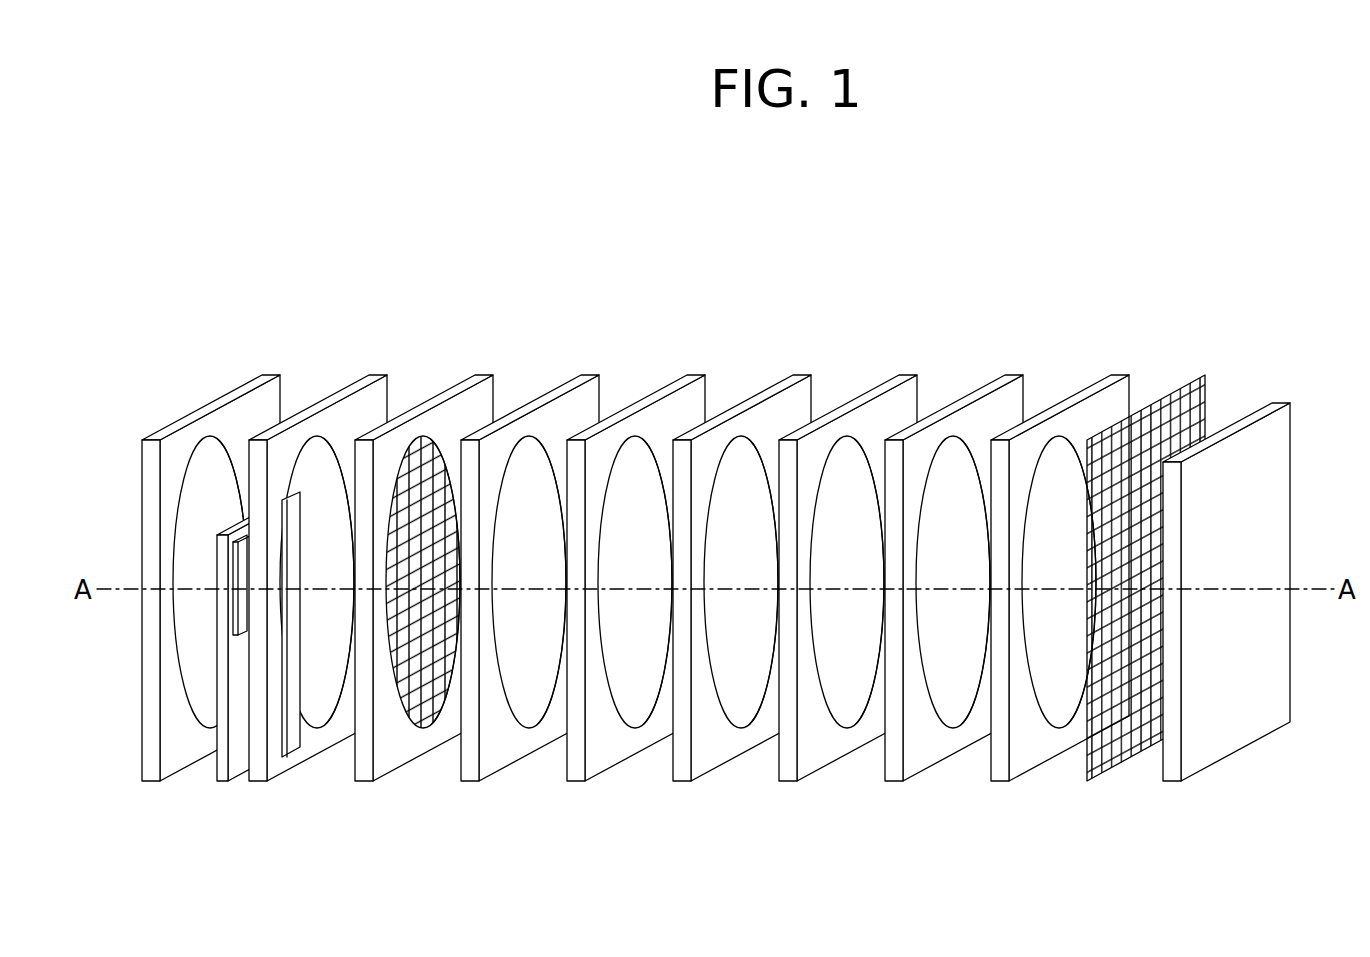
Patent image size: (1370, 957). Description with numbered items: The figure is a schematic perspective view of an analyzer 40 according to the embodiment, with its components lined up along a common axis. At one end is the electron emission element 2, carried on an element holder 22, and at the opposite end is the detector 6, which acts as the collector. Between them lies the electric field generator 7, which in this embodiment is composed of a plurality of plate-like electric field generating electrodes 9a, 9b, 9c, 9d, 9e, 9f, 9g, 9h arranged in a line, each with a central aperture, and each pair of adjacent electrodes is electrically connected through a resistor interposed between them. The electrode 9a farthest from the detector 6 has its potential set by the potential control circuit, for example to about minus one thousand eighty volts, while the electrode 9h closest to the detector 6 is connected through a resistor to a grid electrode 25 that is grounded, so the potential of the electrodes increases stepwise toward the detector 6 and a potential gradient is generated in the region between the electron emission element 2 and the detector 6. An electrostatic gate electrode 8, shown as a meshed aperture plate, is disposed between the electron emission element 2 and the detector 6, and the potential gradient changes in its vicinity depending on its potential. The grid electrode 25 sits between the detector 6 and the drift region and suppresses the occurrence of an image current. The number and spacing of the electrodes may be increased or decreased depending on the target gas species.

The analyzer 40 is at (713, 561).
The electric field generator 7 is at (644, 560).
The electric field generating electrode 9a is at (226, 533).
The electric field generating electrode 9b is at (334, 533).
The electric field generating electrode 9c is at (545, 533).
The electric field generating electrode 9d is at (652, 533).
The electric field generating electrode 9e is at (757, 533).
The electric field generating electrode 9f is at (862, 533).
The electric field generating electrode 9g is at (970, 533).
The electric field generating electrode 9h is at (1076, 533).
The electrostatic gate electrode 8 is at (424, 533).
The element holder 22 is at (235, 712).
The electron emission element 2 is at (288, 597).
The grid electrode 25 is at (1127, 750).
The detector 6 is at (1228, 705).